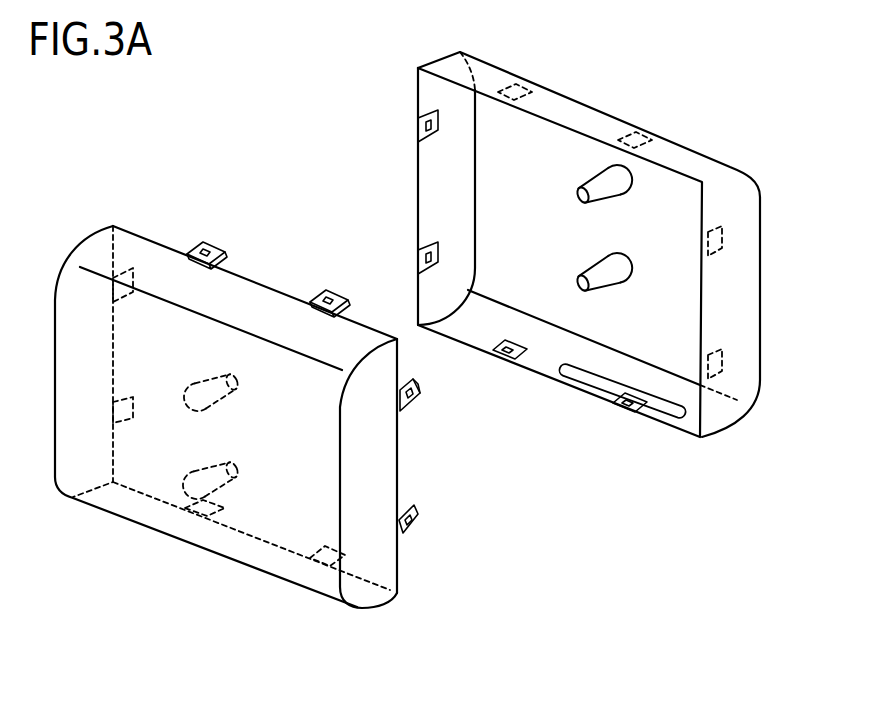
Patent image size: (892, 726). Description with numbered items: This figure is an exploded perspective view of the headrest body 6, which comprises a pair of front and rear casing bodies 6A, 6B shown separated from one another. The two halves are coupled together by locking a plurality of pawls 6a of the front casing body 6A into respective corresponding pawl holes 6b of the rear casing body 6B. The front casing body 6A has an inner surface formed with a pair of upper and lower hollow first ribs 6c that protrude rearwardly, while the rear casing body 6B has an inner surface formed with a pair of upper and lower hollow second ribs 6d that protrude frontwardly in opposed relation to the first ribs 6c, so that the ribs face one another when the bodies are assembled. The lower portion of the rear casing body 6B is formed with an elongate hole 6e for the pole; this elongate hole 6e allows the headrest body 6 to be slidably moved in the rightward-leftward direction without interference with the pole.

The headrest body 6 is at (772, 153).
The front casing body 6A is at (368, 596).
The rear casing body 6B is at (718, 412).
The pawls 6a is at (418, 402).
The pawl holes 6b is at (625, 410).
The hollow ribs (first ribs) 6c is at (218, 458).
The hollow ribs (second ribs) 6d is at (605, 268).
The elongate hole 6e is at (673, 414).